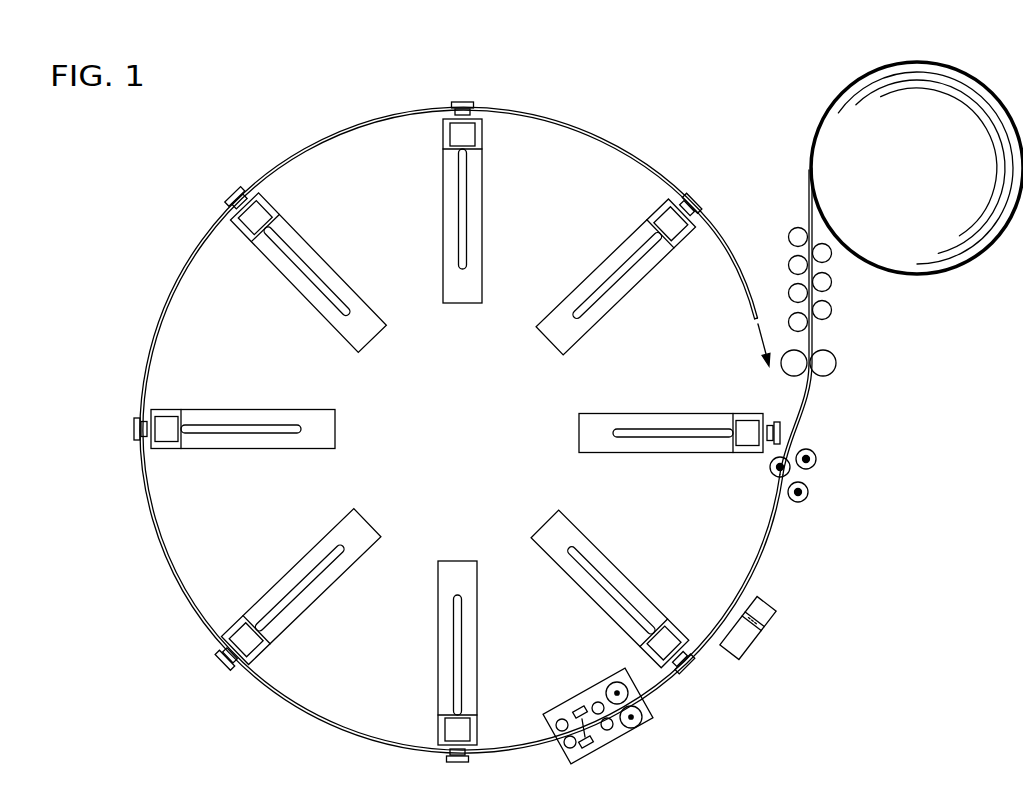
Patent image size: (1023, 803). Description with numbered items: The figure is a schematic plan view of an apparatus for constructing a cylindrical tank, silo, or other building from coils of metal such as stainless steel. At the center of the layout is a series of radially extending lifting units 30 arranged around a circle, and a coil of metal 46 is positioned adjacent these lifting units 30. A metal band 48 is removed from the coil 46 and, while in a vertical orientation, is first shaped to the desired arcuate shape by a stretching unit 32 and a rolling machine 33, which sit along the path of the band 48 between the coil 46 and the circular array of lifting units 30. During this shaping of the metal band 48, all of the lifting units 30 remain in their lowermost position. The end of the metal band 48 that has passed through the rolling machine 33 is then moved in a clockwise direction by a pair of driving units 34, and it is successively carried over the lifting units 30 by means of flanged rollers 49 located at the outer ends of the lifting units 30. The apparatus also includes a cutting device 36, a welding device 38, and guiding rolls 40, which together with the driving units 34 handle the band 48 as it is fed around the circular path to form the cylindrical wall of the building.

The lifting units 30 is at (458, 290).
The stretching unit 32 is at (843, 299).
The rolling machine 33 is at (830, 476).
The driving units 34 is at (849, 360).
The cutting device 36 is at (760, 621).
The welding device 38 is at (575, 710).
The guiding rolls 40 is at (593, 703).
The coil of metal 46 is at (926, 190).
The metal band 48 is at (588, 131).
The flanged rollers 49 is at (777, 426).